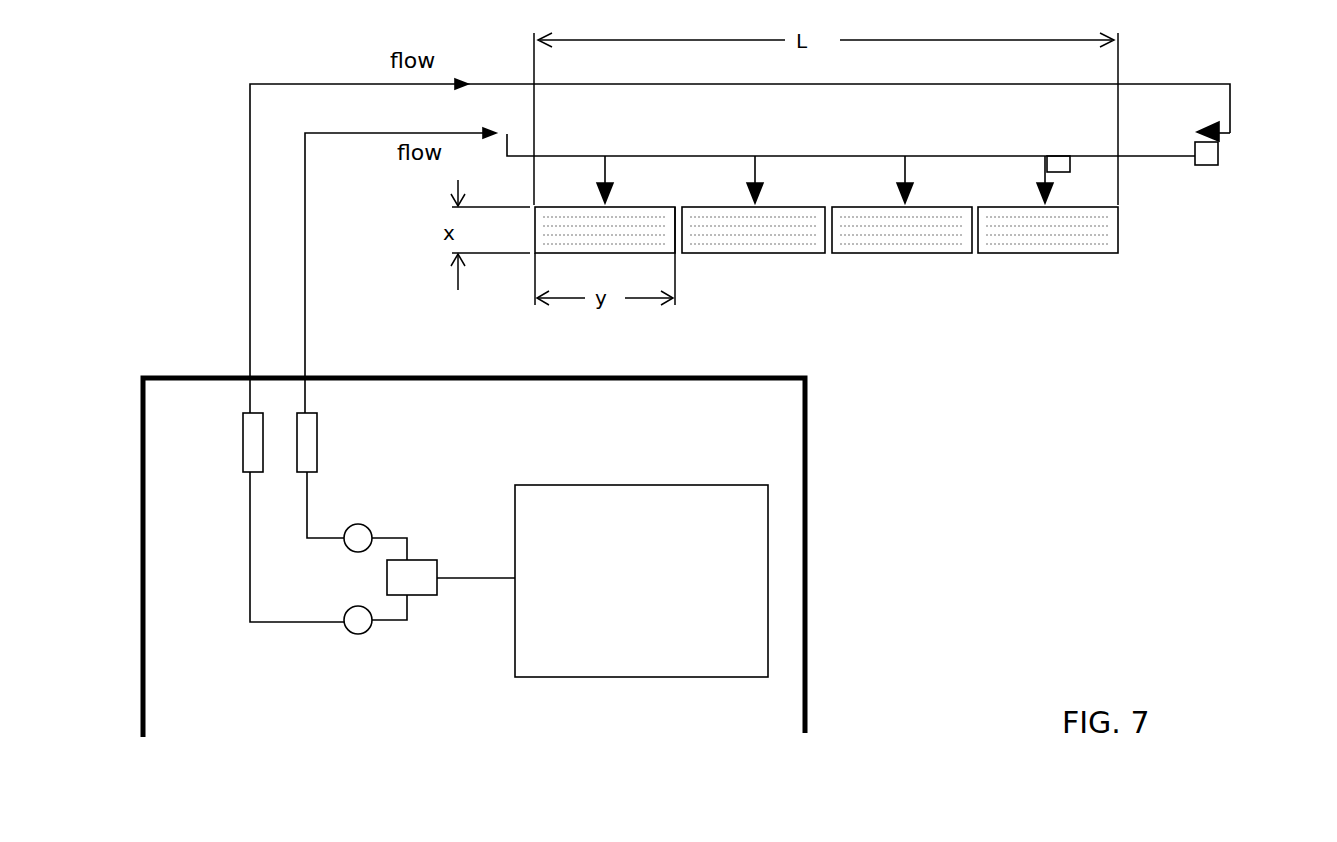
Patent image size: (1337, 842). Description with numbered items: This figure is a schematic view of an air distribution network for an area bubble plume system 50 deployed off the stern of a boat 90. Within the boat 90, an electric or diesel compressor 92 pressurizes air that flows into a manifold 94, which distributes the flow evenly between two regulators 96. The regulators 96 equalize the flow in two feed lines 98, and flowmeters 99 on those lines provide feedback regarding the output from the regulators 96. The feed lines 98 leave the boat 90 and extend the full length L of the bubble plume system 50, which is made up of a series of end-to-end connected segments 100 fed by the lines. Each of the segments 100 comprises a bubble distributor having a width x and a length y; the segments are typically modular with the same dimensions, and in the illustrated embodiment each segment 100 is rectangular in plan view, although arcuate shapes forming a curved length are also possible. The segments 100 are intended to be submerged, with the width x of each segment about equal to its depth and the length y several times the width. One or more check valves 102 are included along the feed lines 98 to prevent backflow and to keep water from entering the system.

The area bubble plume system 50 is at (834, 252).
The boat 90 is at (810, 673).
The compressor 92 is at (645, 490).
The manifold 94 is at (428, 570).
The regulators 96 is at (352, 542).
The feed lines 98 is at (302, 177).
The flowmeters 99 is at (243, 428).
The segments 100 is at (752, 272).
The check valves 102 is at (1098, 184).